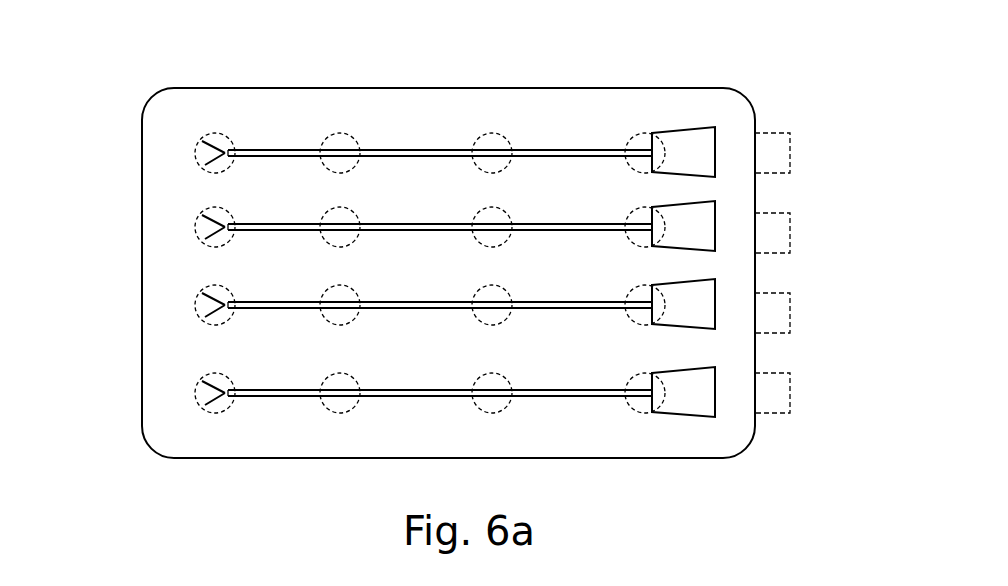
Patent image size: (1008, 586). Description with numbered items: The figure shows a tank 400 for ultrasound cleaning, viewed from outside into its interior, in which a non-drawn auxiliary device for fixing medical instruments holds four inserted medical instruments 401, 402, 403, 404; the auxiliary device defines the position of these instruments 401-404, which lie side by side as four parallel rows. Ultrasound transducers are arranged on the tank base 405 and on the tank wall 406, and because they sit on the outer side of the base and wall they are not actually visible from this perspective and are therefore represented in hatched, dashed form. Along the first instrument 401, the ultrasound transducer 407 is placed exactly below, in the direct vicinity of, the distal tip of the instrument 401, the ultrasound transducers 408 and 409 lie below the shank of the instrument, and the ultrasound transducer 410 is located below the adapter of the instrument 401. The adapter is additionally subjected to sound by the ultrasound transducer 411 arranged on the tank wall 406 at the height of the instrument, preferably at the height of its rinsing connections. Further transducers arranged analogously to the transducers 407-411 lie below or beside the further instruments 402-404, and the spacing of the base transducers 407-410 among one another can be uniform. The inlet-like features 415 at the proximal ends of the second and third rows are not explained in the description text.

The tank 400 is at (461, 291).
The medical instrument 401 is at (681, 138).
The medical instrument 402 is at (690, 235).
The medical instrument 403 is at (688, 311).
The medical instrument 404 is at (688, 396).
The tank base 405 is at (174, 358).
The tank wall 406 is at (820, 260).
The ultrasound transducer 407 is at (218, 134).
The ultrasound transducer 408 is at (337, 133).
The ultrasound transducer 409 is at (488, 133).
The ultrasound transducer 410 is at (633, 136).
The ultrasound transducer 411 is at (791, 160).
The inlet ports 415 is at (191, 291).